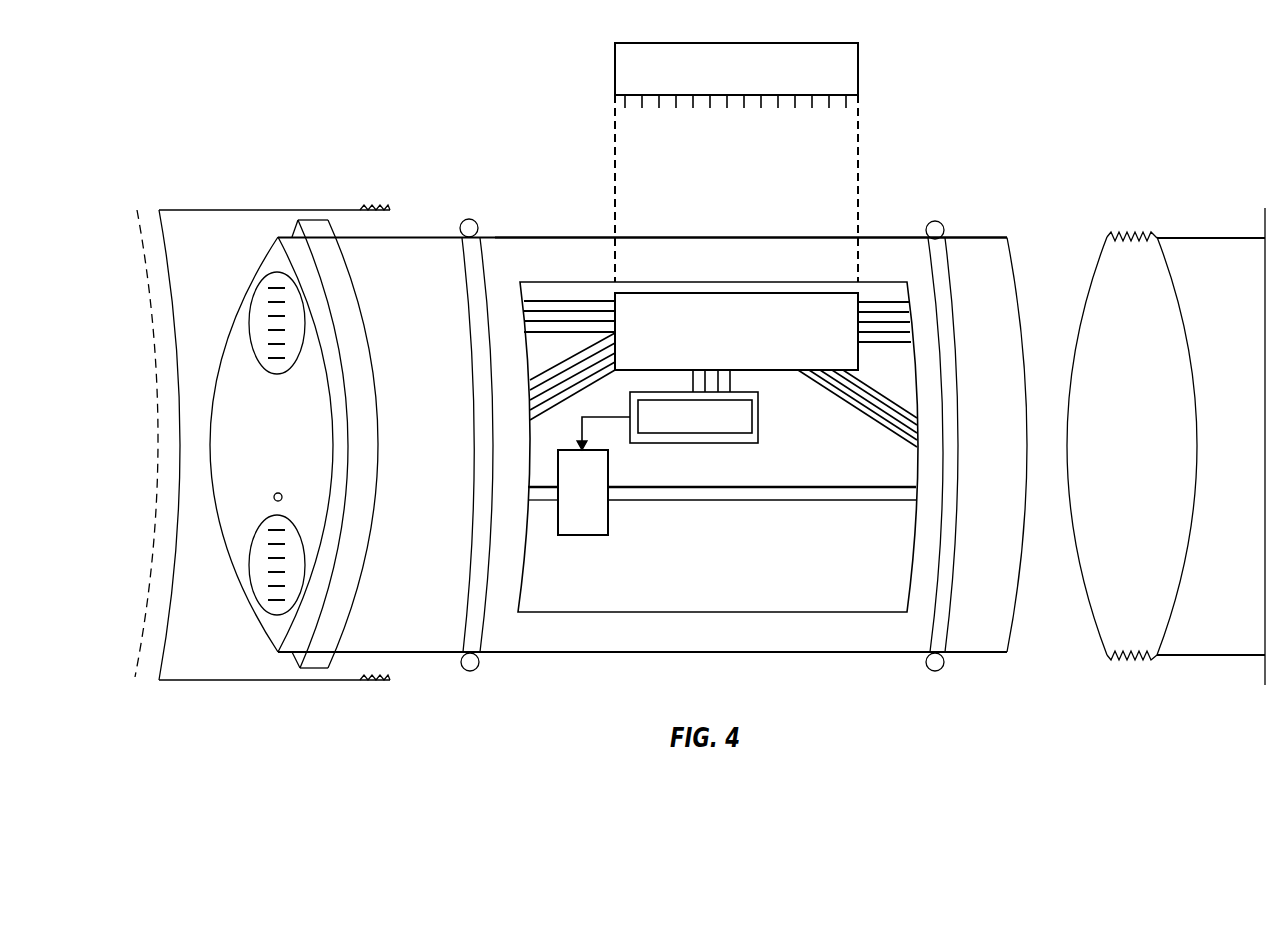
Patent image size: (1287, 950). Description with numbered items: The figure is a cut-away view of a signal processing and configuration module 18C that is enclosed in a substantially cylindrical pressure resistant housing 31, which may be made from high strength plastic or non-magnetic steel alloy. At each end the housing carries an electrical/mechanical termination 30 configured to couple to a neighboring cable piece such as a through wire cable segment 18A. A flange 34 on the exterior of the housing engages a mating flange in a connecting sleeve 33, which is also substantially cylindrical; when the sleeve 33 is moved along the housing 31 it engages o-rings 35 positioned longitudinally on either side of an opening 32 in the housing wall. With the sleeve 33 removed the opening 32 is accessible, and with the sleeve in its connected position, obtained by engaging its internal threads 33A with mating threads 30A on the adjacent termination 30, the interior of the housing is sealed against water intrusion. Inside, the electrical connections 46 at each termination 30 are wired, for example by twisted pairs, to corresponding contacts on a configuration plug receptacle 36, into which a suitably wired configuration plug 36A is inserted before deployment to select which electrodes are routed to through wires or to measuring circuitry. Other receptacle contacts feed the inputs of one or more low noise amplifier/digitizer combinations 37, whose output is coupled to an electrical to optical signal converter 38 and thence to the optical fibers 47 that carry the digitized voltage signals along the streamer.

The through wire cable segment 18A is at (1202, 675).
The signal processing and configuration module 18C is at (966, 104).
The electrical/mechanical termination 30 is at (291, 455).
The mating threads 30A is at (1130, 232).
The pressure resistant housing 31 is at (980, 238).
The opening 32 is at (700, 278).
The connecting sleeve 33 is at (286, 210).
The internal threads 33A is at (367, 677).
The flange 34 is at (323, 640).
The o-rings 35 is at (466, 219).
The configuration plug receptacle 36 is at (828, 312).
The configuration plug 36A is at (842, 53).
The low noise amplifier/digitizer (LNA/ADC) combination 37 is at (760, 418).
The electrical to optical signal converter (EOC) 38 is at (582, 535).
The electrical connections 46 is at (262, 303).
The optical fibers 47 is at (270, 495).